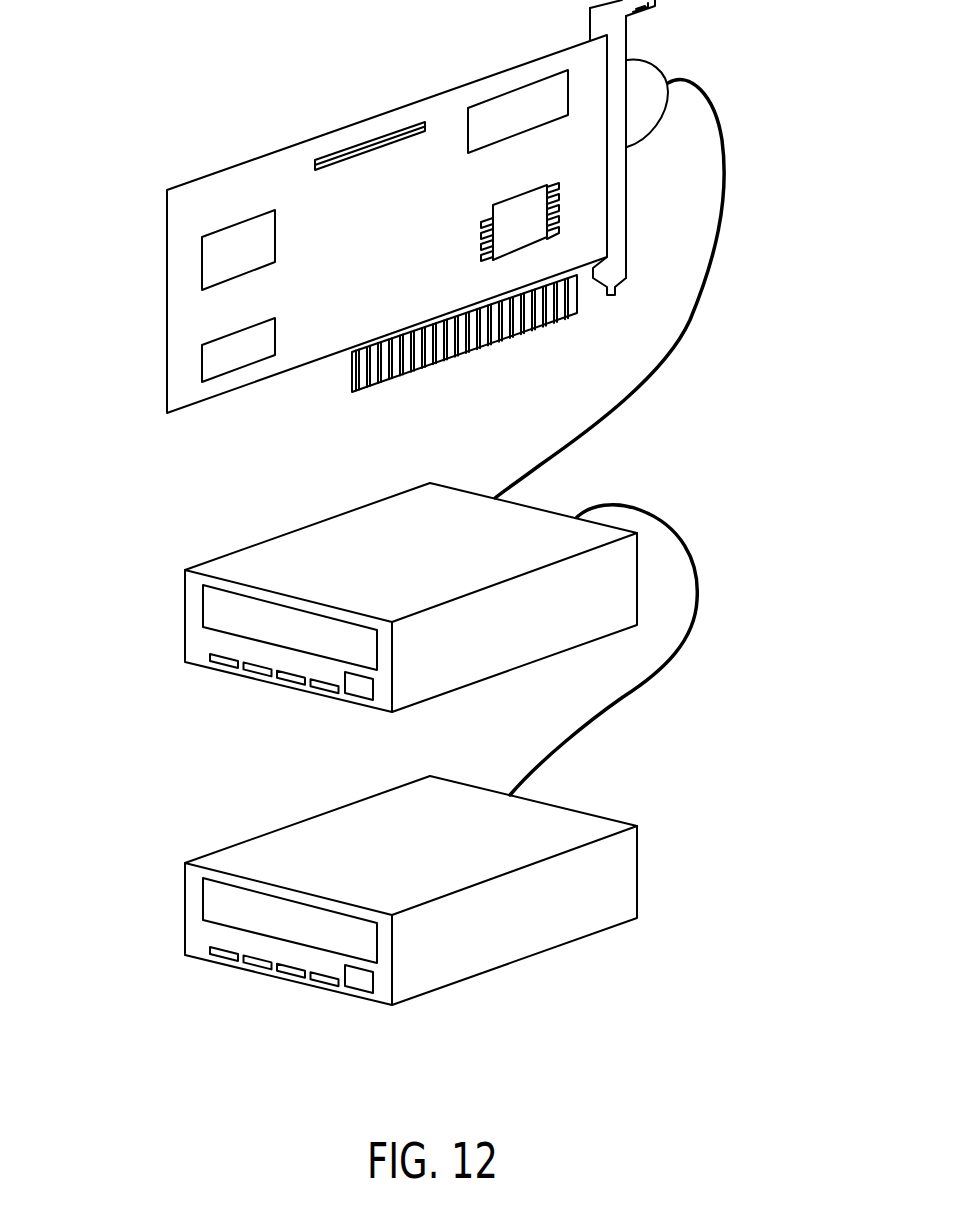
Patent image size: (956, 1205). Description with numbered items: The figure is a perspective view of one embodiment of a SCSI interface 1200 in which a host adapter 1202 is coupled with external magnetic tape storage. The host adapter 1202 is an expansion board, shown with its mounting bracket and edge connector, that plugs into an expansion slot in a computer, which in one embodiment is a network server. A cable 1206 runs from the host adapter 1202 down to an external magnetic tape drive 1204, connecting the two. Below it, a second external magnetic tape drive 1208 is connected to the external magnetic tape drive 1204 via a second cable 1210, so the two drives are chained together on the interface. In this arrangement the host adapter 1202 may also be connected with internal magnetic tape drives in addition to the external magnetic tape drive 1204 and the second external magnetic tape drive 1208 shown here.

The SCSI interface 1200 is at (138, 101).
The host adapter 1202 is at (166, 316).
The external magnetic tape drive 1204 is at (433, 571).
The cable 1206 is at (712, 253).
The second external magnetic tape drive 1208 is at (430, 862).
The second cable 1210 is at (730, 634).